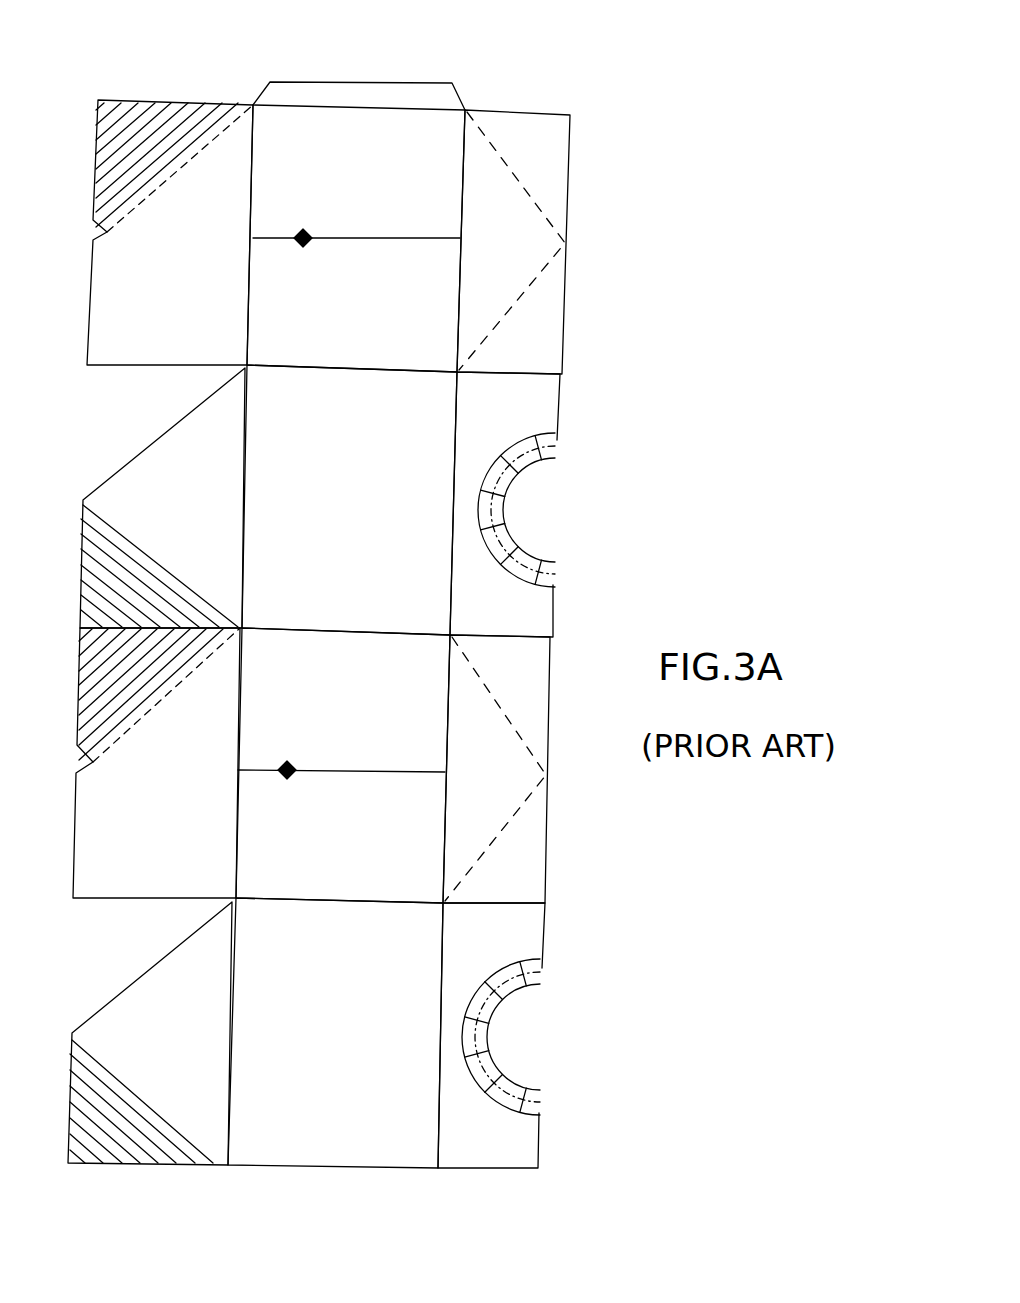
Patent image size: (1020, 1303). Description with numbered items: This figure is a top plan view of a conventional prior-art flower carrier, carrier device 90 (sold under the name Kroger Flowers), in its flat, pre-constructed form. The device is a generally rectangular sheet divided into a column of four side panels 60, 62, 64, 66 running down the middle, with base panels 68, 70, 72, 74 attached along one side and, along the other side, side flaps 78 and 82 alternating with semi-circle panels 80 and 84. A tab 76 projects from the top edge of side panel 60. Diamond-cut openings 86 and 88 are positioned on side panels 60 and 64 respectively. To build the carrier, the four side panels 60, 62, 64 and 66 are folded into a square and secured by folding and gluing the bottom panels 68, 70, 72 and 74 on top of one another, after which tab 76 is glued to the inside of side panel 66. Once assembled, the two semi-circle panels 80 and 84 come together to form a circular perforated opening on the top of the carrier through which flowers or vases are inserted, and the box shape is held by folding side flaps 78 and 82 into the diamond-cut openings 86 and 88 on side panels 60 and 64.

The side panel 60 is at (356, 238).
The side panel 62 is at (349, 500).
The side panel 64 is at (343, 765).
The side panel 66 is at (335, 1033).
The base panel 68 is at (170, 232).
The base panel 70 is at (162, 498).
The base panel 72 is at (156, 763).
The base panel 74 is at (150, 1033).
The tab 76 is at (360, 92).
The side flap 78 is at (513, 242).
The semi-circle panel 80 is at (505, 504).
The side flap 82 is at (496, 769).
The semi-circle panel 84 is at (491, 1035).
The diamond-cut opening 86 is at (305, 228).
The diamond-cut opening 88 is at (291, 760).
The carrier device 90 is at (630, 350).